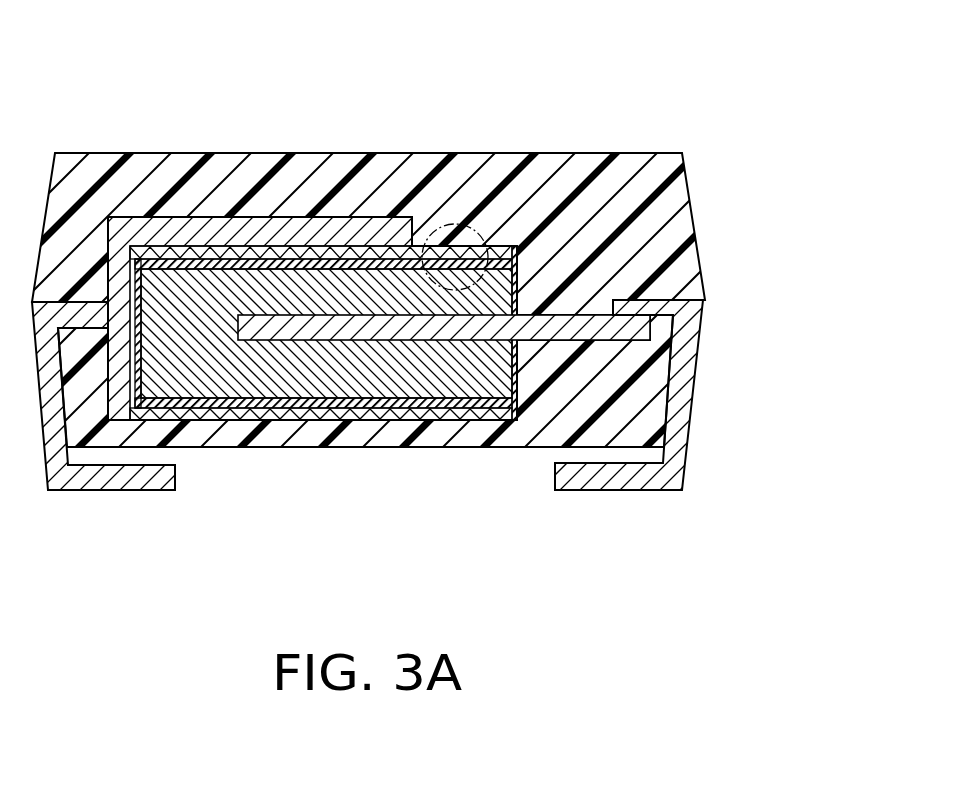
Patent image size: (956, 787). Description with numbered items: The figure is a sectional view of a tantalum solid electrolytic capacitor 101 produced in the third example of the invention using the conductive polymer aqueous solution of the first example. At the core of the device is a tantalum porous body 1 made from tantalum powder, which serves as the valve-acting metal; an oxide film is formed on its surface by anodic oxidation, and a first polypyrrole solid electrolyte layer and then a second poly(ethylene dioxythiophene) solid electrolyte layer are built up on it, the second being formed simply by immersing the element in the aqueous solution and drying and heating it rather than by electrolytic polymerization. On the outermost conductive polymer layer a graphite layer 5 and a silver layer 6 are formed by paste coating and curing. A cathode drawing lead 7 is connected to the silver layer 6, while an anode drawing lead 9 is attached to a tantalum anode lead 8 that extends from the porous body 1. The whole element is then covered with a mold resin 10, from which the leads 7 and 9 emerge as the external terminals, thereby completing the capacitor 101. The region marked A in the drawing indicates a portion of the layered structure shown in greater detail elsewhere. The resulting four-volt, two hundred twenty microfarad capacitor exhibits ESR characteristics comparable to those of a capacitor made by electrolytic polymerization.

The solid electrolytic capacitor 101 is at (478, 301).
The mold resin 10 is at (142, 172).
The silver layer 6 is at (376, 250).
The graphite layer 5 is at (393, 248).
The tantalum porous body 1 is at (400, 372).
The tantalum anode lead 8 is at (465, 332).
The cathode drawing lead 7 is at (116, 478).
The anode drawing lead 9 is at (558, 483).
The detail region A is at (483, 228).